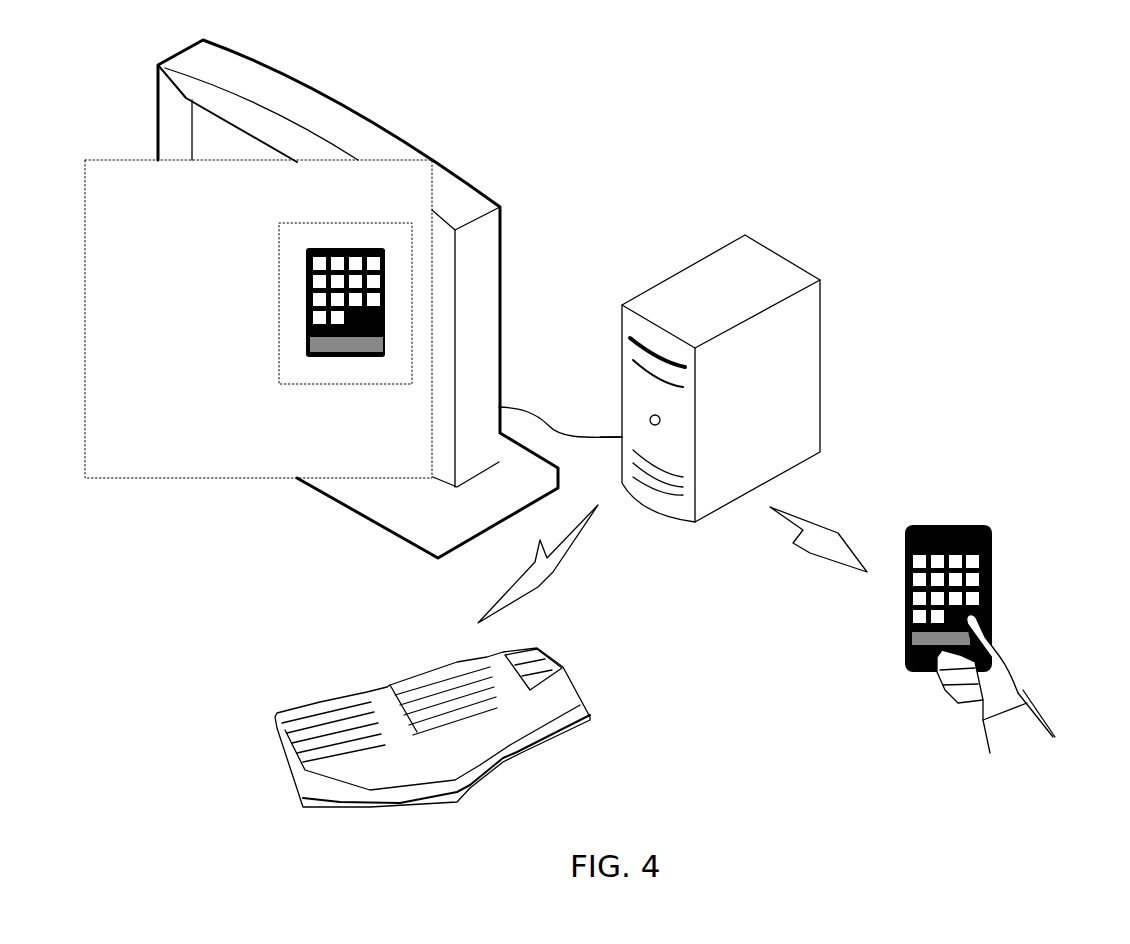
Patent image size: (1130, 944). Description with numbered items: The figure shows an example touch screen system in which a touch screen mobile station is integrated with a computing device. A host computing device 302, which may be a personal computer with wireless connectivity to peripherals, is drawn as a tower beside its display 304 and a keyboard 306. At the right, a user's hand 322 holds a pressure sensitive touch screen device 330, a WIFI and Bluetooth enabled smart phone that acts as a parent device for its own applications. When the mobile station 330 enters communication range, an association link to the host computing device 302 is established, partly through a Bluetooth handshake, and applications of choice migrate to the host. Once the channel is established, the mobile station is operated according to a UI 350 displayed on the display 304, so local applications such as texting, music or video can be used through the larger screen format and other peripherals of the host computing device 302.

The host computing device 302 is at (820, 387).
The display device 304 is at (500, 220).
The keyboard 306 is at (380, 693).
The user's hand 322 is at (1002, 653).
The pressure sensitive touch screen device 330 is at (993, 583).
The UI 350 is at (330, 358).